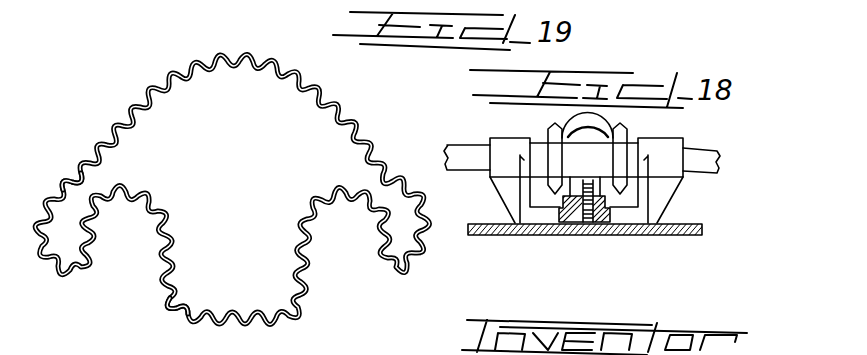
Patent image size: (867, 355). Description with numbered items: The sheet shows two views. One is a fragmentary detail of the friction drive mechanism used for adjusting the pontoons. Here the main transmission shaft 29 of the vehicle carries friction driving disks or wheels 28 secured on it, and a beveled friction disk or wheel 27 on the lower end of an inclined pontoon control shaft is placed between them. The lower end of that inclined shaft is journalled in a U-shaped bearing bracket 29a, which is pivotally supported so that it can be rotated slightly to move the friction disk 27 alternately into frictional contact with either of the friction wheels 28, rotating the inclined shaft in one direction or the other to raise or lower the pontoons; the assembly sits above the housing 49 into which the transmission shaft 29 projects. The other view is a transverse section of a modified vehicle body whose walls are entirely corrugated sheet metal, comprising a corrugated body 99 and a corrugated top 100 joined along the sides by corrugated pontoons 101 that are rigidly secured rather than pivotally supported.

In FIG. 19, the corrugated top 100 is at (234, 61).
In FIG. 19, the corrugated pontoons 101 is at (70, 166).
In FIG. 19, the corrugated body 99 is at (167, 305).
In FIG. 18, the main transmission shaft 29 is at (463, 158).
In FIG. 18, the beveled friction disks or wheels 27 is at (564, 118).
In FIG. 18, the friction driving disks or wheels 28 is at (618, 158).
In FIG. 18, the U-shaped bearing bracket 29a is at (588, 183).
In FIG. 18, the housing 49 is at (670, 223).